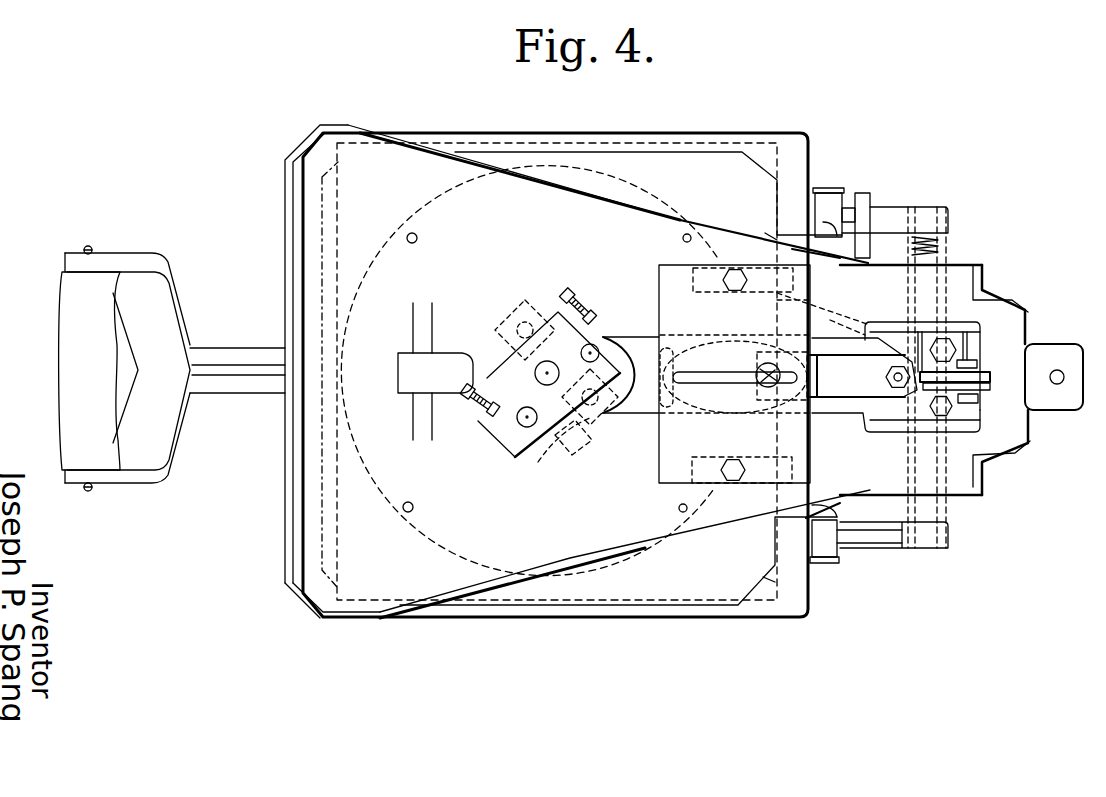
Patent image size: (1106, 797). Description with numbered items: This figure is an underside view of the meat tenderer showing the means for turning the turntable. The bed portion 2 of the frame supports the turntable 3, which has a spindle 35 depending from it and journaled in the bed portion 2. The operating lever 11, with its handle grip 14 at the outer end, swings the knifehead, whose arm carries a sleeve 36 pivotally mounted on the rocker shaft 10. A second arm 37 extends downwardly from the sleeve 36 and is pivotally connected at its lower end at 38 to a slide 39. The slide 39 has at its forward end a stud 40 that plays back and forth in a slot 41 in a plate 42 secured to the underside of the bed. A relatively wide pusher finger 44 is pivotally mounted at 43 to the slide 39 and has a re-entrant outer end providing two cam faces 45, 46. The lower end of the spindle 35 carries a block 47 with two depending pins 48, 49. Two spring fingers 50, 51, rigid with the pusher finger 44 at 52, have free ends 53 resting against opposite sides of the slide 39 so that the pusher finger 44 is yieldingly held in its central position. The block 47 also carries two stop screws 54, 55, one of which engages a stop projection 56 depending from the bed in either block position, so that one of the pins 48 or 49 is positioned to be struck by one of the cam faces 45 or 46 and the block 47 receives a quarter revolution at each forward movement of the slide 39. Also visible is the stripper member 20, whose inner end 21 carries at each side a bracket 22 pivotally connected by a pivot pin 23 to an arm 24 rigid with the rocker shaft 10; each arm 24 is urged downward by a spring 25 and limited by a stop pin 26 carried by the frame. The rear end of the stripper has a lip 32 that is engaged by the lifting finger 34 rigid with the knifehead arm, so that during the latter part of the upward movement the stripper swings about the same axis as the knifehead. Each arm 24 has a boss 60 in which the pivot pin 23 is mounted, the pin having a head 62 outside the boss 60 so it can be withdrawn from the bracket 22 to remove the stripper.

The bed portion 2 is at (500, 165).
The turntable 3 is at (635, 585).
The rocker shaft 10 is at (940, 250).
The operating lever 11 is at (242, 355).
The handle grip 14 is at (73, 362).
The stripper member 20 is at (707, 133).
The inner end of stripper 21 is at (790, 178).
The bracket 22 is at (792, 249).
The pivot pin 23 is at (832, 231).
The arm 24 is at (893, 212).
The spring 25 is at (940, 246).
The stop pin 26 is at (870, 200).
The lip 32 is at (828, 318).
The lifting finger 34 is at (875, 333).
The spindle 35 is at (506, 428).
The sleeve 36 is at (943, 283).
The second arm 37 is at (977, 377).
The pivot connection 38 is at (972, 402).
The slide 39 is at (847, 398).
The stud 40 is at (768, 388).
The slot 41 is at (714, 382).
The plate 42 is at (682, 465).
The pivot 43 is at (900, 400).
The pusher finger 44 is at (642, 343).
The cam face 45 is at (606, 338).
The cam face 46 is at (612, 418).
The block 47 is at (515, 434).
The pin 48 is at (517, 308).
The pin 49 is at (527, 428).
The spring finger 50 is at (731, 334).
The spring finger 51 is at (735, 388).
The spring finger attachment 52 is at (661, 424).
The free end 53 is at (794, 350).
The stop screw 54 is at (565, 300).
The stop screw 55 is at (467, 407).
The stop projection 56 is at (443, 358).
The boss 60 is at (834, 205).
The head 62 is at (827, 192).